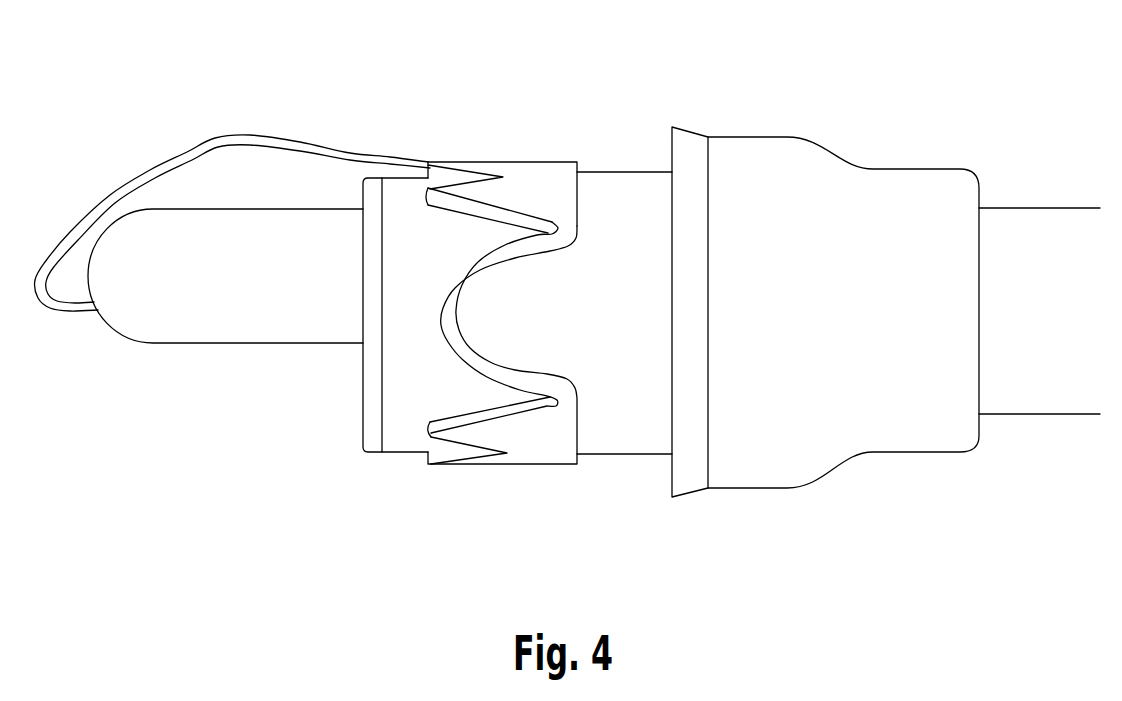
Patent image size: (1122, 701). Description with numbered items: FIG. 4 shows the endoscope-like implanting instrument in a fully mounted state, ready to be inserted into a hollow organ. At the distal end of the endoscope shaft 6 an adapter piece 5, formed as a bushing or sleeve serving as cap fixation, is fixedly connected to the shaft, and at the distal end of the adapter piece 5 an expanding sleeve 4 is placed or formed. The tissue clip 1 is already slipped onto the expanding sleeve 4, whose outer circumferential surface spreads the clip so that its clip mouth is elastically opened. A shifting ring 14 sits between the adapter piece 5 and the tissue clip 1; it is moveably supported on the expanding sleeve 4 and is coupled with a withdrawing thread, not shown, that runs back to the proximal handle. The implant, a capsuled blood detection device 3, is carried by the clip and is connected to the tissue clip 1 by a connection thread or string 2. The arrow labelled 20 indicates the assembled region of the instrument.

The tissue clip 1 is at (533, 447).
The connection thread or string 2 is at (183, 157).
The capsuled blood detection device 3 is at (186, 320).
The expanding sleeve 4 is at (608, 190).
The adapter piece (cap fixation) 5 is at (823, 177).
The endoscope shaft 6 is at (1050, 228).
The shifting ring 14 is at (687, 478).
The collar 20 is at (452, 510).